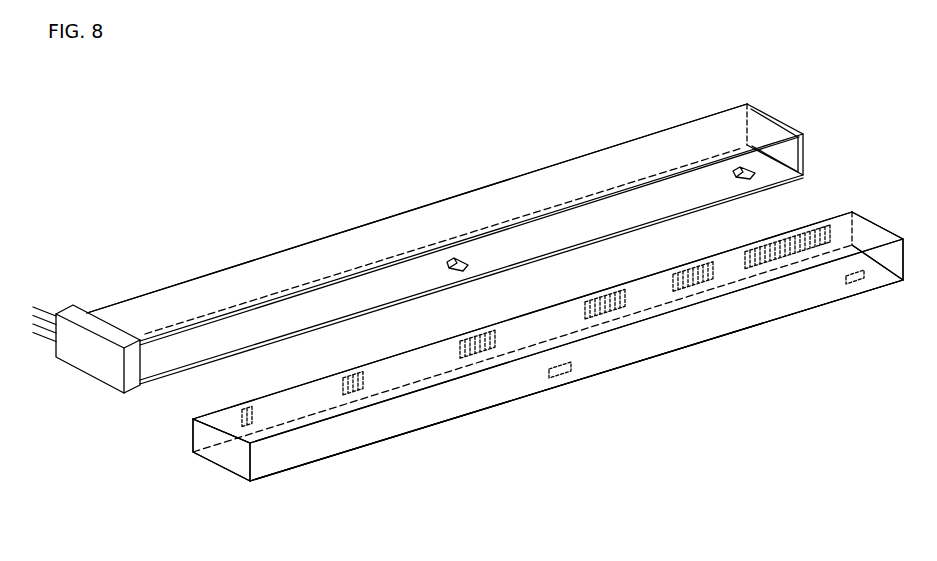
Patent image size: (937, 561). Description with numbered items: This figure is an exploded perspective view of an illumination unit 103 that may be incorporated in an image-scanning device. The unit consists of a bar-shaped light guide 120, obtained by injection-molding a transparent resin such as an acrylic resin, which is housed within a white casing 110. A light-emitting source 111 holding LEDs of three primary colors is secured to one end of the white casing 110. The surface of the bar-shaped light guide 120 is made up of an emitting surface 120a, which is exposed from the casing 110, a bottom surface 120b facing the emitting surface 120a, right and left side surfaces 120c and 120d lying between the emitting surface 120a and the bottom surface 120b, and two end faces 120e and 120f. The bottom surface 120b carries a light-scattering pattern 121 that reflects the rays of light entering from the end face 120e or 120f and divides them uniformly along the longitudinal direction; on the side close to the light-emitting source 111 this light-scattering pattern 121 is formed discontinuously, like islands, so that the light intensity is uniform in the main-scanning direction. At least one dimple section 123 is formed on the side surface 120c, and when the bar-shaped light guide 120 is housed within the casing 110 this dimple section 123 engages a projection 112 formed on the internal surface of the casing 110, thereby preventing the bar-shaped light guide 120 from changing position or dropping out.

The illumination unit 103 is at (523, 176).
The white casing 110 is at (370, 247).
The light-emitting source 111 is at (115, 348).
The projection 112 is at (455, 258).
The bar-shaped light guide 120 is at (460, 475).
The emitting surface 120a is at (647, 347).
The bottom surface 120b is at (192, 431).
The side surface 120c is at (238, 482).
The side surface 120d is at (436, 358).
The end face 120e is at (220, 447).
The end face 120f is at (893, 230).
The light-scattering pattern 121 is at (611, 298).
The dimple section 123 is at (565, 379).